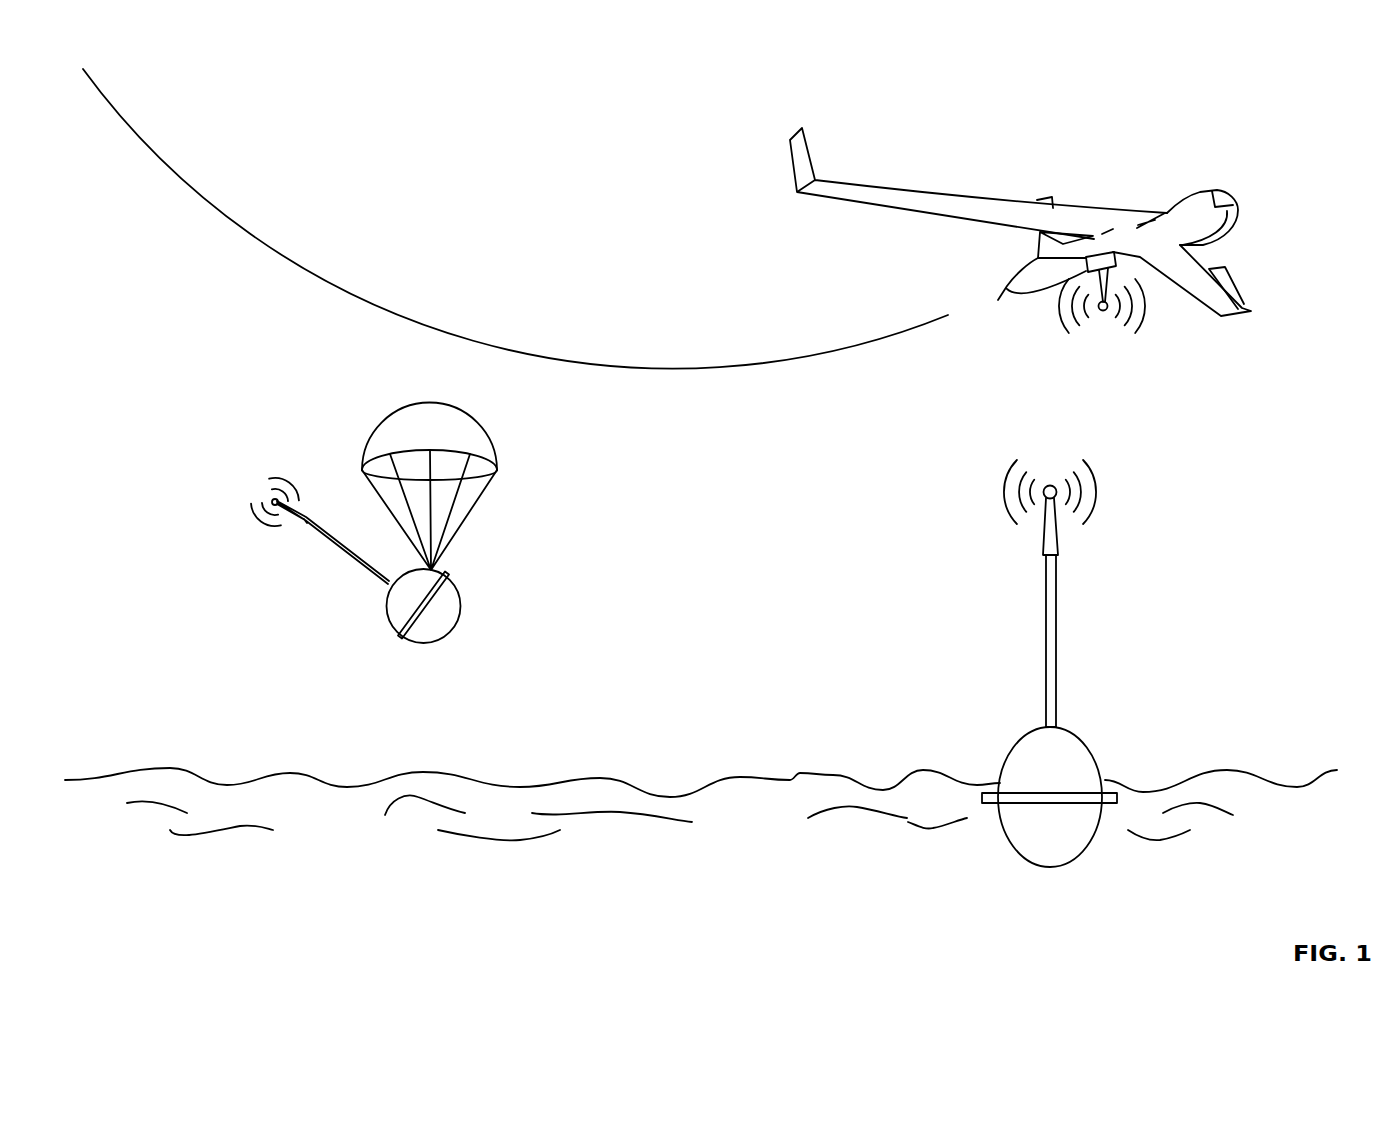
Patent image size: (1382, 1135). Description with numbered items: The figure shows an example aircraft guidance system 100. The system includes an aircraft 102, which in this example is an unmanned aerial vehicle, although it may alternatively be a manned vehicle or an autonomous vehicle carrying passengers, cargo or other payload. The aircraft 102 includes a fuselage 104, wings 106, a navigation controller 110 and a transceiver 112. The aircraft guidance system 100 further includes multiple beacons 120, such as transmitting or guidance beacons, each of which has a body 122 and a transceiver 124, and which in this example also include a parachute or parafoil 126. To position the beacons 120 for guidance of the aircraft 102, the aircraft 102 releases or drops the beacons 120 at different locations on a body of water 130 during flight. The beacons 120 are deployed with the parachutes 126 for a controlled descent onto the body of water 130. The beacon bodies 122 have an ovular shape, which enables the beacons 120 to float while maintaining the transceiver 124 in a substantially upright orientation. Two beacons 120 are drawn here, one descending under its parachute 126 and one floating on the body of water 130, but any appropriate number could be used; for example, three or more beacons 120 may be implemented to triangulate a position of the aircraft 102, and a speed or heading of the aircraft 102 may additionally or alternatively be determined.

The aircraft guidance system 100 is at (1218, 92).
The aircraft 102 is at (1256, 181).
The fuselage 104 is at (1167, 211).
The wings 106 is at (902, 190).
The navigation controller 110 is at (1030, 262).
The transceiver 112 is at (1068, 333).
The beacons 120 is at (530, 435).
The body 122 is at (460, 603).
The transceiver 124 is at (343, 553).
The parachute or parafoil 126 is at (368, 440).
The body of water 130 is at (795, 888).